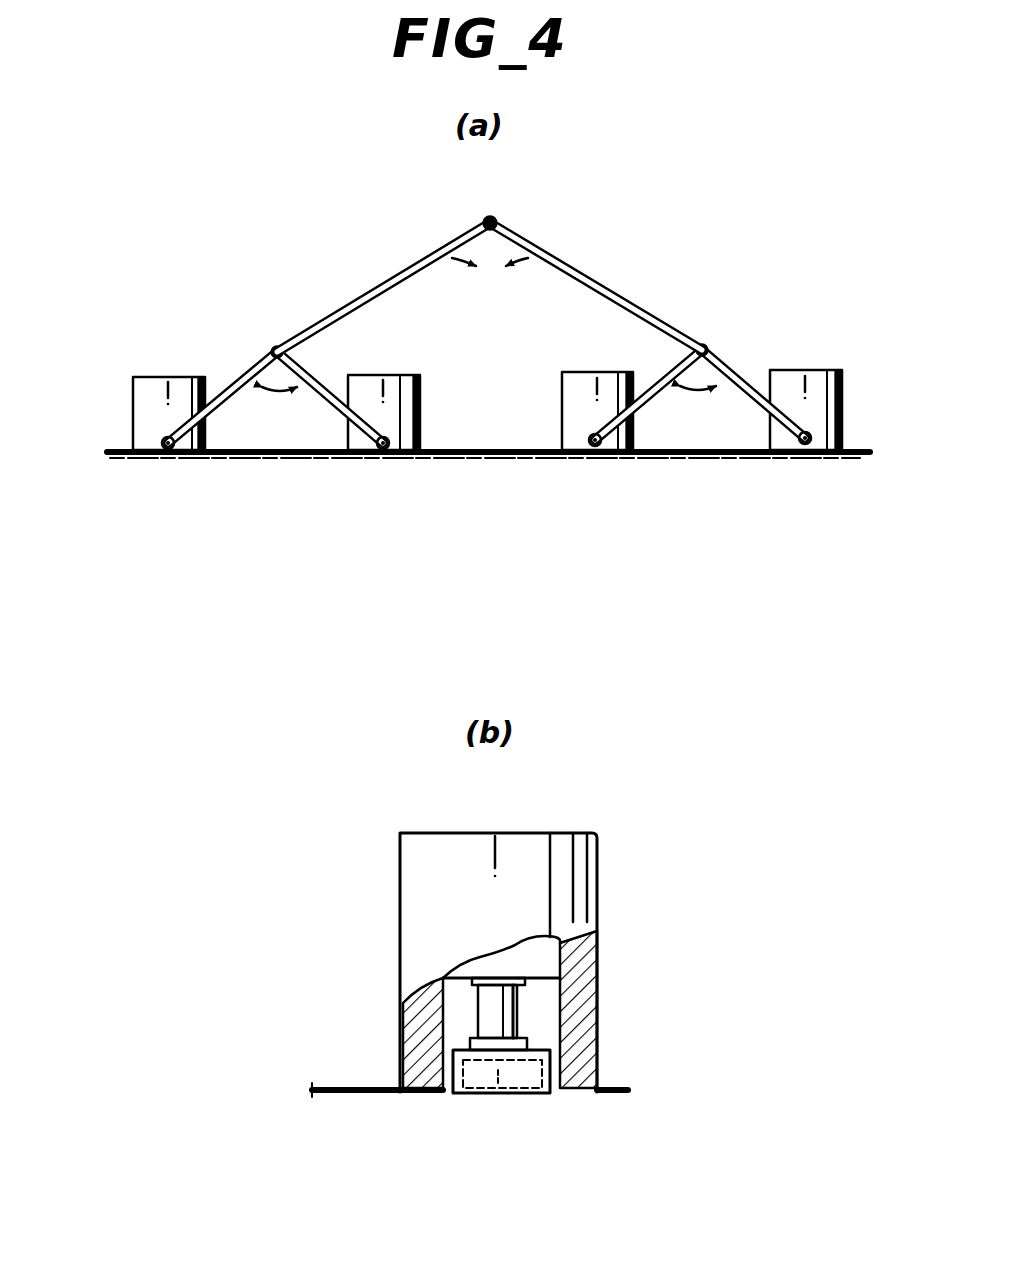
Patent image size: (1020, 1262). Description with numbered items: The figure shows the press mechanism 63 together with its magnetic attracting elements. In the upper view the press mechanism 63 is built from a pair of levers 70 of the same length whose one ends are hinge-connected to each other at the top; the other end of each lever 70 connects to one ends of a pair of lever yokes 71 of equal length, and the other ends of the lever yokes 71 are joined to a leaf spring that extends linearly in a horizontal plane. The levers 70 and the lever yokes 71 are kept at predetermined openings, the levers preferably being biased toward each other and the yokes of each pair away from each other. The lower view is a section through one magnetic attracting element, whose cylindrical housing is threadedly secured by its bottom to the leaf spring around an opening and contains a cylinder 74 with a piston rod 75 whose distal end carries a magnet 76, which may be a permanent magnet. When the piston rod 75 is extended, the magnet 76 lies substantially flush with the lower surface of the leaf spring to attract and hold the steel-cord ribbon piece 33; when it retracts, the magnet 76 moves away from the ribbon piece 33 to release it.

The ribbon piece 33 is at (497, 460).
The press mechanism 63 is at (590, 236).
The lever 70 is at (371, 290).
The lever yoke 71 is at (240, 382).
The cylinder 74 is at (530, 960).
The piston rod 75 is at (510, 1010).
The magnet 76 is at (508, 1094).